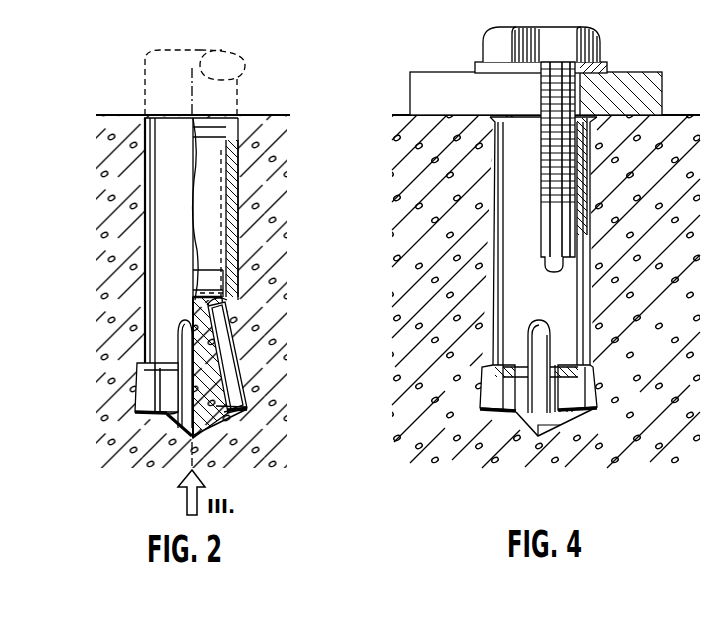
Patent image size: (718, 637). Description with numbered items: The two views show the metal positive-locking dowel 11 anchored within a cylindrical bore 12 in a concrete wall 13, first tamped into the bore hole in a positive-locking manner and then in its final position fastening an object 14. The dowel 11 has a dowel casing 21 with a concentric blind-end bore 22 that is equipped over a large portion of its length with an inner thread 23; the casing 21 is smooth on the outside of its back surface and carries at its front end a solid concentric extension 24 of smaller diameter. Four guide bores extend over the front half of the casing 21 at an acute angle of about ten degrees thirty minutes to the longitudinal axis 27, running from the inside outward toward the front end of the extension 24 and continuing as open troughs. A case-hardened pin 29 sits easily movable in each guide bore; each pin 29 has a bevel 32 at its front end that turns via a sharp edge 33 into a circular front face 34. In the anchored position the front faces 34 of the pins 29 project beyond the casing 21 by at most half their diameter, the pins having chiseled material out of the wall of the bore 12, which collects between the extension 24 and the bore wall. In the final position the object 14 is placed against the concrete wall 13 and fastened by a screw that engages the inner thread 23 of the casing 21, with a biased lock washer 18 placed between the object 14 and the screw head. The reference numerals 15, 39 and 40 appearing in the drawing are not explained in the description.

In FIG. 2, the positive-locking dowel 11 is at (118, 168).
In FIG. 4, the positive-locking dowel 11 is at (462, 182).
In FIG. 4, the cylindrical bore 12 is at (512, 228).
In FIG. 2, the concrete wall 13 is at (262, 392).
In FIG. 4, the concrete wall 13 is at (432, 212).
In FIG. 4, the object 14 is at (647, 82).
In FIG. 4, the bolt 15 is at (553, 88).
In FIG. 4, the biased lock washer 18 is at (607, 62).
In FIG. 2, the dowel casing 21 is at (256, 226).
In FIG. 4, the dowel casing 21 is at (517, 276).
In FIG. 2, the blind-end bore 22 is at (240, 172).
In FIG. 2, the inner thread 23 is at (252, 187).
In FIG. 2, the extension 24 is at (150, 388).
In FIG. 4, the extension 24 is at (590, 408).
In FIG. 2, the longitudinal axis 27 is at (182, 452).
In FIG. 2, the pin 29 is at (228, 362).
In FIG. 4, the pin 29 is at (533, 387).
In FIG. 2, the bevel 32 is at (248, 410).
In FIG. 2, the sharp edge 33 is at (250, 423).
In FIG. 2, the circular front face 34 is at (150, 407).
In FIG. 4, the circular front face 34 is at (493, 413).
In FIG. 2, the bolt outline 39 is at (138, 100).
In FIG. 2, the bolt head outline 40 is at (238, 71).